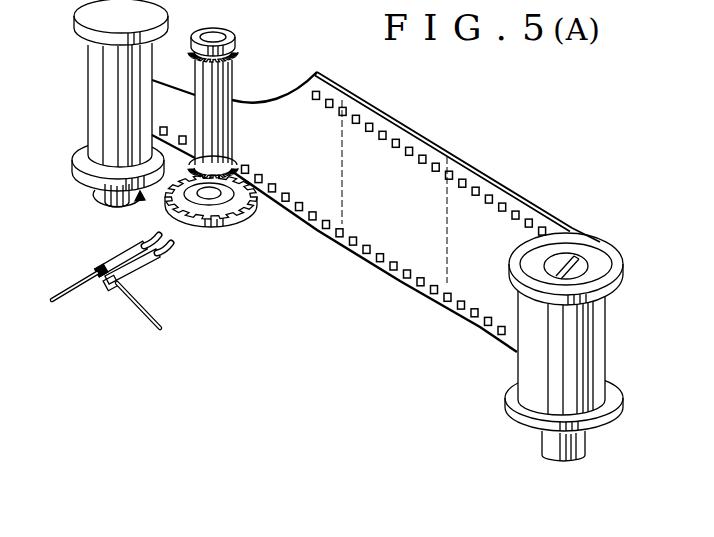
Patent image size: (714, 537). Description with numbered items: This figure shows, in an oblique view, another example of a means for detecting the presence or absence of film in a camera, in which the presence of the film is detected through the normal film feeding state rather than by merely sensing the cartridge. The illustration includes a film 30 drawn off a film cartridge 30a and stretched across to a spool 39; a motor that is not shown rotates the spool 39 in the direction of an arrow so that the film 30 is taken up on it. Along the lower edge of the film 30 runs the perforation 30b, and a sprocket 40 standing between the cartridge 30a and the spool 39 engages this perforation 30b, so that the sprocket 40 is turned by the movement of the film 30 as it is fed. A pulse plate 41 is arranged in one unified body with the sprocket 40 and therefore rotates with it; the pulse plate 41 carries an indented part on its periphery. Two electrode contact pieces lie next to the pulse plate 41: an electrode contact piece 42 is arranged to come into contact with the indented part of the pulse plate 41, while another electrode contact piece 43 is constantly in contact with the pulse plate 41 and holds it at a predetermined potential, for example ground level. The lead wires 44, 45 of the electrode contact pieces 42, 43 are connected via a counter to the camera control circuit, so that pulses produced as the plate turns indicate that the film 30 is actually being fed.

The film 30 is at (450, 141).
The film cartridge 30a is at (533, 357).
The perforation 30b is at (392, 270).
The spool 39 is at (97, 87).
The sprocket 40 is at (227, 80).
The pulse plate 41 is at (240, 222).
The electrode contact piece 42 is at (157, 267).
The electrode contact piece 43 is at (117, 253).
The lead wire 44 is at (138, 310).
The lead wire 45 is at (75, 290).